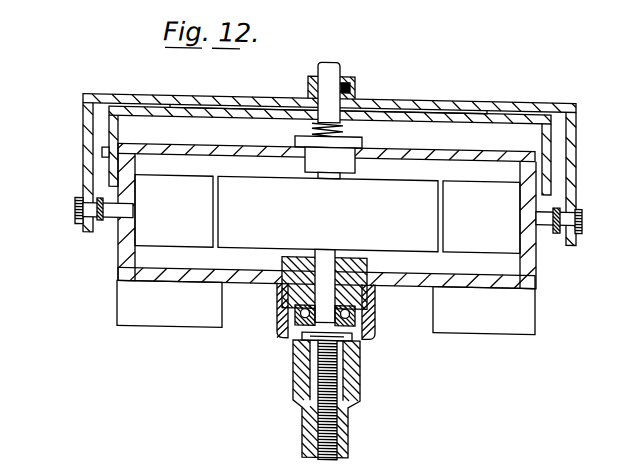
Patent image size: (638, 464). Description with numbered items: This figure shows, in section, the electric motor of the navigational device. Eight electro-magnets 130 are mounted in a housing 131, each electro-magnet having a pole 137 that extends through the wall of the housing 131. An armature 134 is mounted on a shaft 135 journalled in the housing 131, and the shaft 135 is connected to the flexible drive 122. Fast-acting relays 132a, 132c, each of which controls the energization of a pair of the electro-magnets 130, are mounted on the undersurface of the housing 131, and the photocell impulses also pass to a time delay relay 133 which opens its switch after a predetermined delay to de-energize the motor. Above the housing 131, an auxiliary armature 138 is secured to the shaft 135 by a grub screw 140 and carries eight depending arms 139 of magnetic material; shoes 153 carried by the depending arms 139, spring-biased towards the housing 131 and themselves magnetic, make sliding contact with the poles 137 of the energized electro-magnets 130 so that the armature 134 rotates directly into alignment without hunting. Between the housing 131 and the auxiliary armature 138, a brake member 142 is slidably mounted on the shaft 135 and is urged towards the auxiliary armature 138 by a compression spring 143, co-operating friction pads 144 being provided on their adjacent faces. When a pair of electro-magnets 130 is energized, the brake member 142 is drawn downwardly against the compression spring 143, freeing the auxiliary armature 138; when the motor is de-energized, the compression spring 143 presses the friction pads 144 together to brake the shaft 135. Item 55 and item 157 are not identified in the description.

The locating tab 55 is at (105, 156).
The flexible drive 122 is at (328, 437).
The electro-magnets 130 is at (327, 214).
The housing 131 is at (530, 266).
The fast-acting relay 132a is at (188, 308).
The fast-acting relay 132c is at (495, 310).
The time delay relay 133 is at (575, 224).
The armature 134 is at (328, 213).
The shaft 135 is at (343, 323).
The pole 137 is at (552, 222).
The auxiliary armature 138 is at (487, 100).
The depending arms 139 is at (84, 165).
The grub screw 140 is at (353, 84).
The brake member 142 is at (438, 109).
The compression spring 143 is at (343, 122).
The friction pads 144 is at (245, 102).
The shoes 153 is at (100, 220).
The nut 157 is at (118, 207).